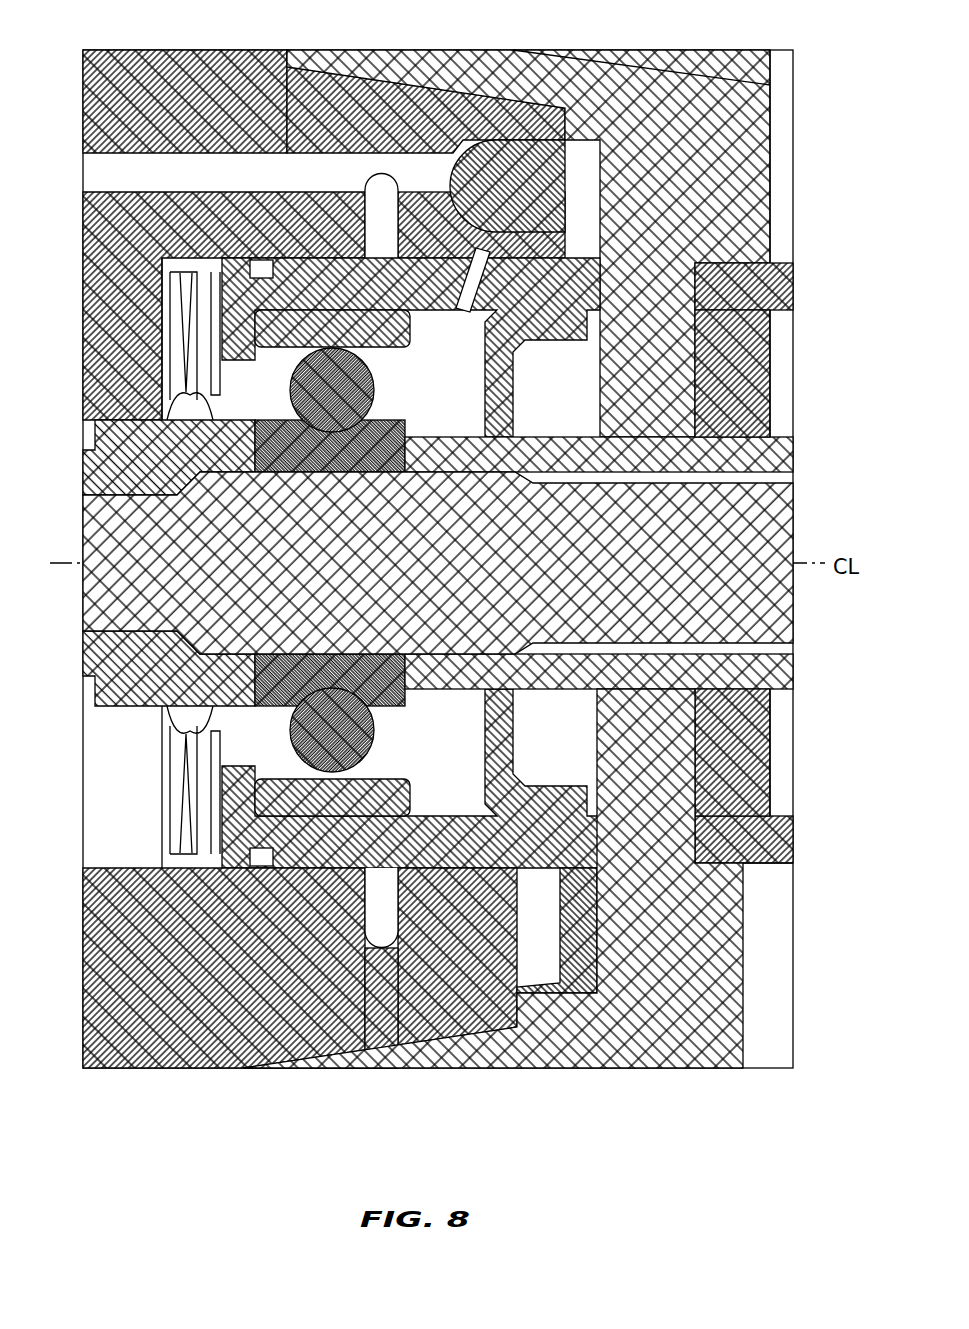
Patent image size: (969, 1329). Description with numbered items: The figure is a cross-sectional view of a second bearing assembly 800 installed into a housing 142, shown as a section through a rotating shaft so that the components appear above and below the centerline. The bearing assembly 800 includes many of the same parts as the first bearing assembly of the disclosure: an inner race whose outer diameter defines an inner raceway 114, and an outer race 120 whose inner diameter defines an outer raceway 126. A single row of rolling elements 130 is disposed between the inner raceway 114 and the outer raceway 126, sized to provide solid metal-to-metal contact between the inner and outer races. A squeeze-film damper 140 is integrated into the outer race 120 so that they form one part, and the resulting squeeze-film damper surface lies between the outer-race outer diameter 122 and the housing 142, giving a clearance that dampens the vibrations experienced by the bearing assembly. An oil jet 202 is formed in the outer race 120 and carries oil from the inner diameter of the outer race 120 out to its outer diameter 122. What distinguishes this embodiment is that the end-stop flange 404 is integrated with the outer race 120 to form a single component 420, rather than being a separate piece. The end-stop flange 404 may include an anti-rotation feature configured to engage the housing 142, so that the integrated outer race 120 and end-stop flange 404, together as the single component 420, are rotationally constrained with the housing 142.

The bearing assembly 800 is at (500, 225).
The housing 142 is at (199, 113).
The single component 420 is at (437, 210).
The end-stop flange 404 is at (604, 216).
The outer diameter 122 is at (297, 253).
The outer race 120 is at (317, 300).
The outer raceway 126 is at (340, 340).
The rolling elements 130 is at (347, 400).
The inner raceway 114 is at (332, 440).
The oil jet 202 is at (492, 289).
The squeeze-film damper 140 is at (432, 870).